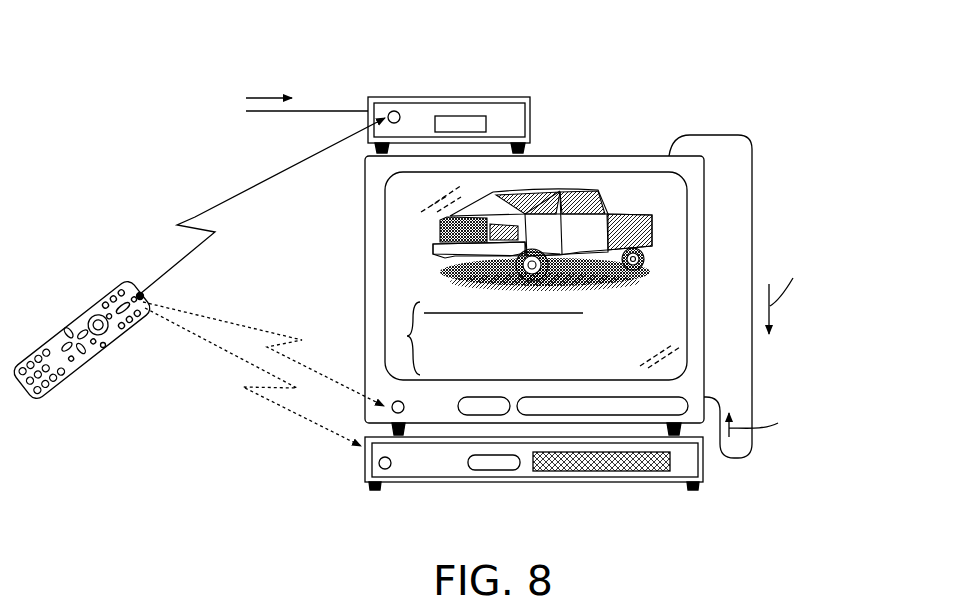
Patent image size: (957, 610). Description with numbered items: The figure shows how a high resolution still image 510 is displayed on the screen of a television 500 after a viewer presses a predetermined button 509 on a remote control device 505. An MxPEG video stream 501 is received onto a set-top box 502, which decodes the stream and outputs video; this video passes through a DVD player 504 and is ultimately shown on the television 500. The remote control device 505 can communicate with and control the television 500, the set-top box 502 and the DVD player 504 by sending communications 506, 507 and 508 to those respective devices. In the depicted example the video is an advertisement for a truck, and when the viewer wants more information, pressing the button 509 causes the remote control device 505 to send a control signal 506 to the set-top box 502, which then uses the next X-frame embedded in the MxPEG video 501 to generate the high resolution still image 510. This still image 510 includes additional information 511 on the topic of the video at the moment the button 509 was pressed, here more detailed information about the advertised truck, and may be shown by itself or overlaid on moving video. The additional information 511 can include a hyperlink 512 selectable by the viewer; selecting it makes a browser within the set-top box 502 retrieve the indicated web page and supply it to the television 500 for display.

The television 500 is at (669, 156).
The MxPEG video stream 501 is at (262, 98).
The set-top box 502 is at (527, 99).
The DVD player 504 is at (561, 483).
The remote control device 505 is at (44, 388).
The control signal 506 is at (194, 217).
The communication 507 is at (259, 326).
The communication 508 is at (270, 400).
The button 509 is at (104, 348).
The high resolution still image 510 is at (779, 296).
The additional information 511 is at (407, 336).
The hyperlink 512 is at (411, 305).